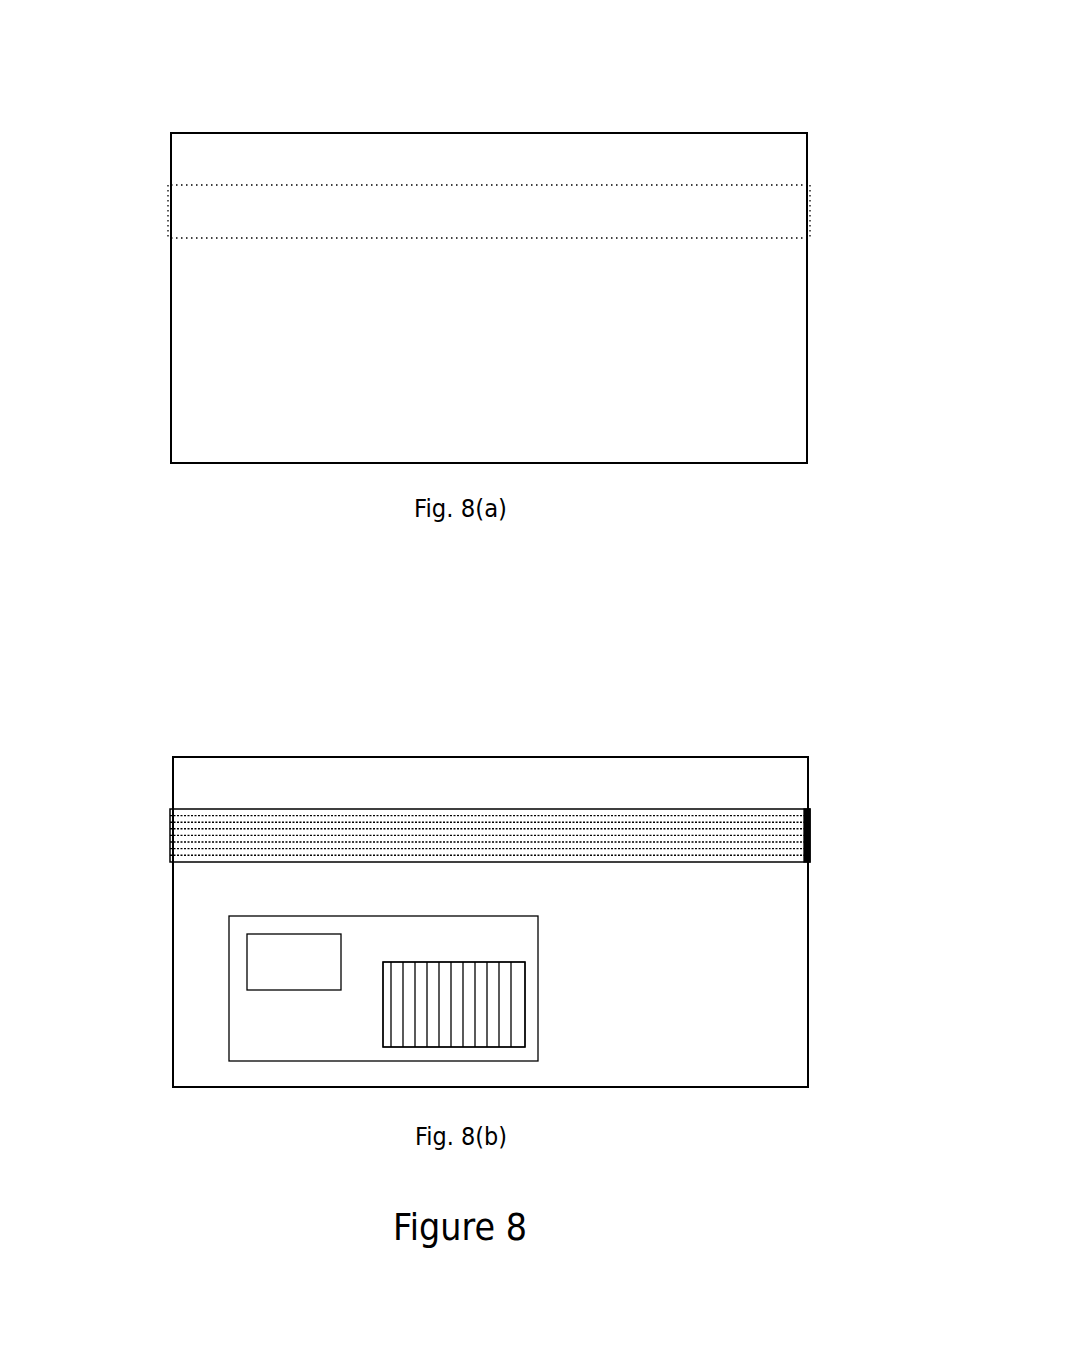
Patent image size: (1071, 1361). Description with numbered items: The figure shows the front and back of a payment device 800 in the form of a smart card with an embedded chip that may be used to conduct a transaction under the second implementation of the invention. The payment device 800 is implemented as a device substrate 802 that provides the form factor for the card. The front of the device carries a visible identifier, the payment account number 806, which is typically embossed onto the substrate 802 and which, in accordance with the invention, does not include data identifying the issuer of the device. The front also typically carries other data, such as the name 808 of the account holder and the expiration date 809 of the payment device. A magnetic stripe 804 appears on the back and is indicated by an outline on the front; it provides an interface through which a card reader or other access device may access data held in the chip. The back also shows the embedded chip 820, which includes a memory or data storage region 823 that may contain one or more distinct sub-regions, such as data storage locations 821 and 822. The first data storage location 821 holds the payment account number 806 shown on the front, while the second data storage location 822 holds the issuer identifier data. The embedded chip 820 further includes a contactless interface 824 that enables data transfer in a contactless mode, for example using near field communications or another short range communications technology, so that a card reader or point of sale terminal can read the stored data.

In FIG. 8A, the payment device 800 is at (480, 91).
In FIG. 8B, the payment device 800 is at (483, 713).
In FIG. 8A, the device substrate 802 is at (283, 132).
In FIG. 8B, the device substrate 802 is at (285, 755).
In FIG. 8A, the magnetic stripe 804 is at (595, 185).
In FIG. 8B, the magnetic stripe 804 is at (597, 808).
In FIG. 8A, the payment account number 806 is at (666, 299).
In FIG. 8A, the name 808 is at (252, 377).
In FIG. 8A, the expiration date 809 is at (666, 378).
In FIG. 8B, the embedded chip 820 is at (225, 1017).
In FIG. 8B, the data storage location 821 is at (417, 1028).
In FIG. 8B, the data storage location 822 is at (463, 982).
In FIG. 8B, the data storage region 823 is at (525, 962).
In FIG. 8B, the contactless interface 824 is at (247, 943).